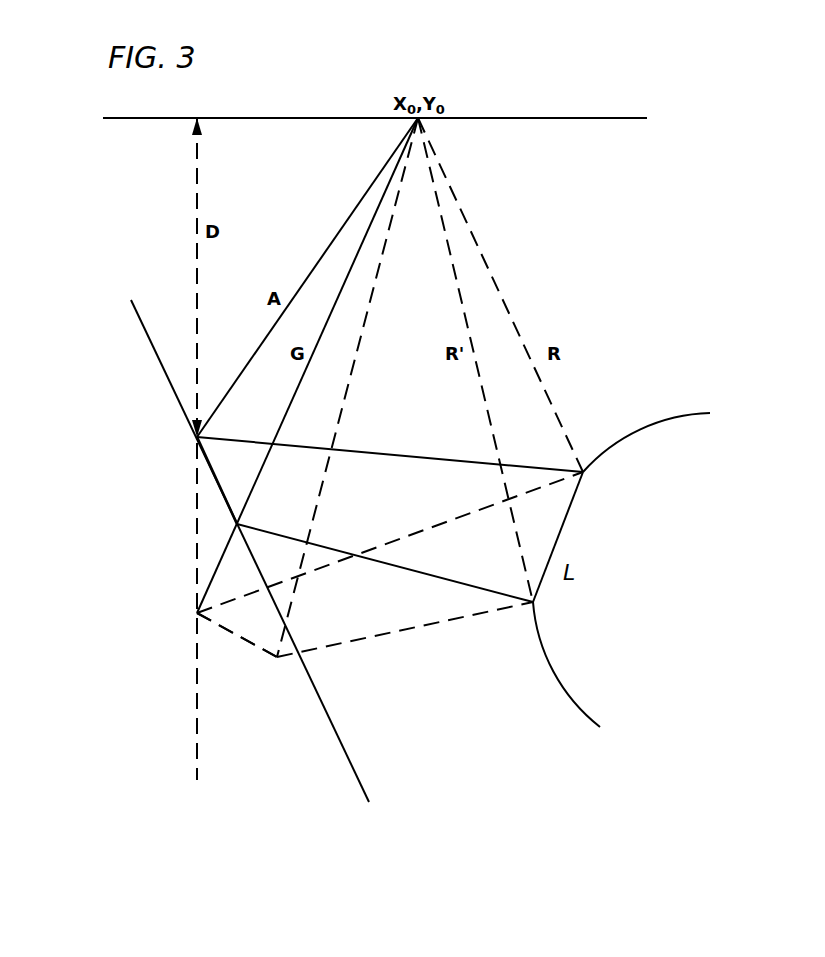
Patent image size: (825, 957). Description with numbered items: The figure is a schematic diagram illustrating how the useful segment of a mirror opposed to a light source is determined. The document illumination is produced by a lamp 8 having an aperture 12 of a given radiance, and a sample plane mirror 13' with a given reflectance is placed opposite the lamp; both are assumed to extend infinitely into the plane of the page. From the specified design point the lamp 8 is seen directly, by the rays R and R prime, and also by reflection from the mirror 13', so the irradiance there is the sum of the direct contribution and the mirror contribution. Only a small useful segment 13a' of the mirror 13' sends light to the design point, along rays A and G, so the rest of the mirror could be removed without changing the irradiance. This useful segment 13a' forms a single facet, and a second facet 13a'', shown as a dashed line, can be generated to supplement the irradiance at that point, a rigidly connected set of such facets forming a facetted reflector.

The lamp 8 is at (650, 400).
The aperture 12 is at (572, 508).
The sample plane mirror 13' is at (250, 551).
The useful segment 13a' is at (233, 480).
The second facet 13a'' is at (238, 642).